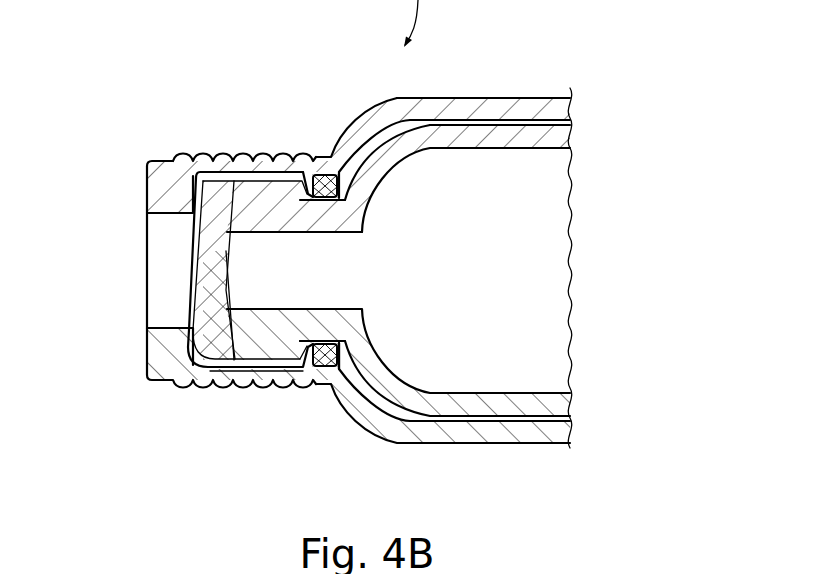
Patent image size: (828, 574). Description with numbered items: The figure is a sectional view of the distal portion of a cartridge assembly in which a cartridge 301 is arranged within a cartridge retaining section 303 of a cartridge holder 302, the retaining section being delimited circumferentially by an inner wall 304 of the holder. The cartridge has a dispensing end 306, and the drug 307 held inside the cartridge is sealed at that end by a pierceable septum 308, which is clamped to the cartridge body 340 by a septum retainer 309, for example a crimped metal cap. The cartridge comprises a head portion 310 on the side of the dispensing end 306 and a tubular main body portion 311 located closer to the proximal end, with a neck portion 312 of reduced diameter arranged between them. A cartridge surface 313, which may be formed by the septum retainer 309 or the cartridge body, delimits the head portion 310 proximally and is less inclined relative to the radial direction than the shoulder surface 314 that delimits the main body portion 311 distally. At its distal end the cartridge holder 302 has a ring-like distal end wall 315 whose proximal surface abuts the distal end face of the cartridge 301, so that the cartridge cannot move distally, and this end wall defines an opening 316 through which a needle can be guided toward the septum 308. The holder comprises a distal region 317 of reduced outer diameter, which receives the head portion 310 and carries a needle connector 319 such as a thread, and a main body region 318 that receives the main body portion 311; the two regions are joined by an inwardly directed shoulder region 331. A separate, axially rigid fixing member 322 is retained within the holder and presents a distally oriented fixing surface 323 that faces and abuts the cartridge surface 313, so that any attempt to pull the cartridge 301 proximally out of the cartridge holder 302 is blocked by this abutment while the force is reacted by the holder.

The cartridge 301 is at (572, 136).
The cartridge holder 302 is at (572, 108).
The cartridge retaining section 303 is at (388, 414).
The inner wall 304 is at (372, 148).
The dispensing end 306 is at (193, 260).
The drug 307 is at (565, 262).
The septum 308 is at (248, 180).
The septum retainer 309 is at (275, 368).
The head portion 310 is at (205, 368).
The main body portion 311 is at (512, 416).
The neck portion 312 is at (340, 370).
The cartridge surface 313 is at (303, 173).
The shoulder surface 314 is at (378, 147).
The distal end wall 315 is at (163, 178).
The opening 316 is at (165, 236).
The distal region 317 is at (202, 163).
The main body region 318 is at (497, 105).
The needle connector 319 is at (247, 333).
The fixing member 322 is at (327, 175).
The fixing surface 323 is at (303, 173).
The shoulder region 331 is at (375, 145).
The cartridge body 340 is at (572, 403).